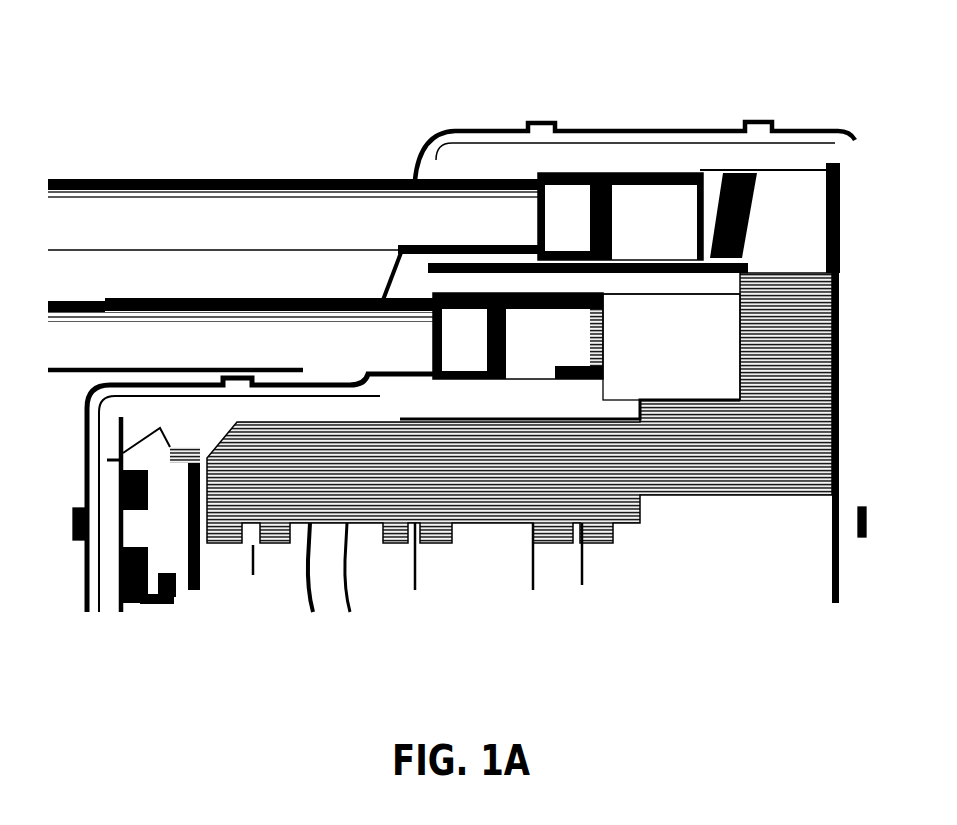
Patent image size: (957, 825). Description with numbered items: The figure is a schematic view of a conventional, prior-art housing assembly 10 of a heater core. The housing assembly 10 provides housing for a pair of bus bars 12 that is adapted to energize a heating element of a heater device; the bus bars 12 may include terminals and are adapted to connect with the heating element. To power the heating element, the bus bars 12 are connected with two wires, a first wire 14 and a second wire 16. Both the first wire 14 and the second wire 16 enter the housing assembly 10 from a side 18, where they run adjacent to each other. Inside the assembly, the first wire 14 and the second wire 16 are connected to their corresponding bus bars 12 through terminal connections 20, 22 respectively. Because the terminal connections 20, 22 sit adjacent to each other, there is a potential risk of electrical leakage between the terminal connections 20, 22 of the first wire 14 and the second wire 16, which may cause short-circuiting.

The conventional housing assembly 10 is at (645, 620).
The pair of bus bars 12 is at (345, 498).
The first wire 14 is at (202, 192).
The second wire 16 is at (253, 312).
The side 18 is at (430, 145).
The terminal connection 20 is at (755, 175).
The terminal connection 22 is at (705, 340).